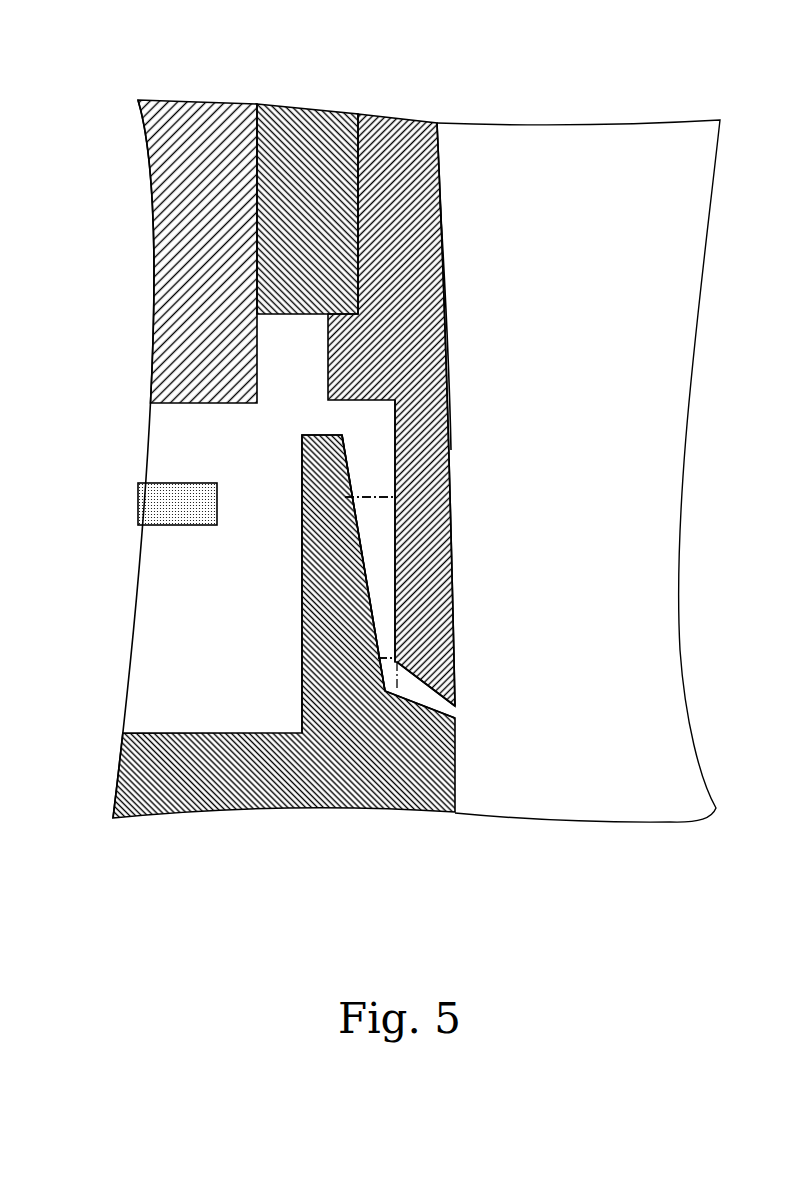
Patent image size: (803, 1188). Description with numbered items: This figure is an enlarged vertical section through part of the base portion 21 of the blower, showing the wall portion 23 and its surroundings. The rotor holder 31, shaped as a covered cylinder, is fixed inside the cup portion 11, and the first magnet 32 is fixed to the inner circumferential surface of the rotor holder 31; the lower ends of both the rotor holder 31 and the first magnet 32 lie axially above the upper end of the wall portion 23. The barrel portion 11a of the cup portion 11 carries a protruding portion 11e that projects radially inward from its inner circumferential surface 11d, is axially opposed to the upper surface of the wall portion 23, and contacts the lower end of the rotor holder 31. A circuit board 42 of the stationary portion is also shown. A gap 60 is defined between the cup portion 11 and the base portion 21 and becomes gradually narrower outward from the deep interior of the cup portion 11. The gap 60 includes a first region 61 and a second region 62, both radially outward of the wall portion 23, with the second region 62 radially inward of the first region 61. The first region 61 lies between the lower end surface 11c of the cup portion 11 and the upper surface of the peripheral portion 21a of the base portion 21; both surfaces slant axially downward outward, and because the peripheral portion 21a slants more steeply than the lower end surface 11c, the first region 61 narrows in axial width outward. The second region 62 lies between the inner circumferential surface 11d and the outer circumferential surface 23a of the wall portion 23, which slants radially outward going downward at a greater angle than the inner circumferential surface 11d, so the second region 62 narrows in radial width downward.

The cup portion 11 is at (378, 218).
The barrel portion 11a is at (442, 268).
The lower end surface 11c is at (452, 662).
The inner circumferential surface 11d is at (393, 593).
The protruding portion 11e is at (442, 345).
The base portion 21 is at (280, 792).
The peripheral portion 21a is at (433, 718).
The wall portion 23 is at (333, 648).
The outer circumferential surface 23a is at (353, 545).
The rotor holder 31 is at (288, 210).
The first magnet 32 is at (180, 358).
The circuit board 42 is at (172, 507).
The gap 60 is at (385, 568).
The first region 61 is at (453, 705).
The second region 62 is at (378, 528).